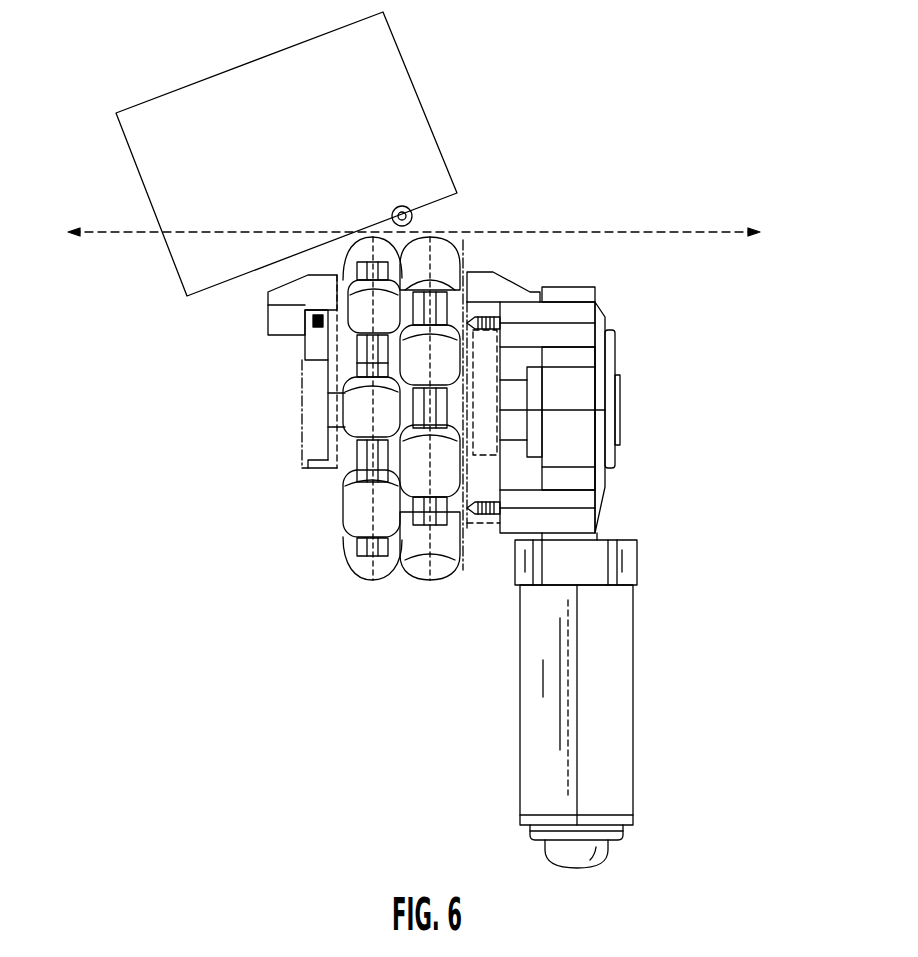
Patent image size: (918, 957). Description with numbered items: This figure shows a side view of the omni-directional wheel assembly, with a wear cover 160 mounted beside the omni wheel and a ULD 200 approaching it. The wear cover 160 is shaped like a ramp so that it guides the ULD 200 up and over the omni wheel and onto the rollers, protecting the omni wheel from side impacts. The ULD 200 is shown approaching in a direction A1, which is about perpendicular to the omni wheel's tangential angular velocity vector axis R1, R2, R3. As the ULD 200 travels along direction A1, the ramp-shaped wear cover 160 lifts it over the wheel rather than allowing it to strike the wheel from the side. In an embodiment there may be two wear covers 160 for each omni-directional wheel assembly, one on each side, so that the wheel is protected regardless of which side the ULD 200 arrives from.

The ULD 200 is at (172, 172).
The direction A1 is at (730, 232).
The tangential angular velocity vector axis R1 is at (490, 195).
The tangential angular velocity vector axis R2 is at (490, 195).
The tangential angular velocity vector axis R3 is at (410, 211).
The wear cover 160 is at (303, 293).